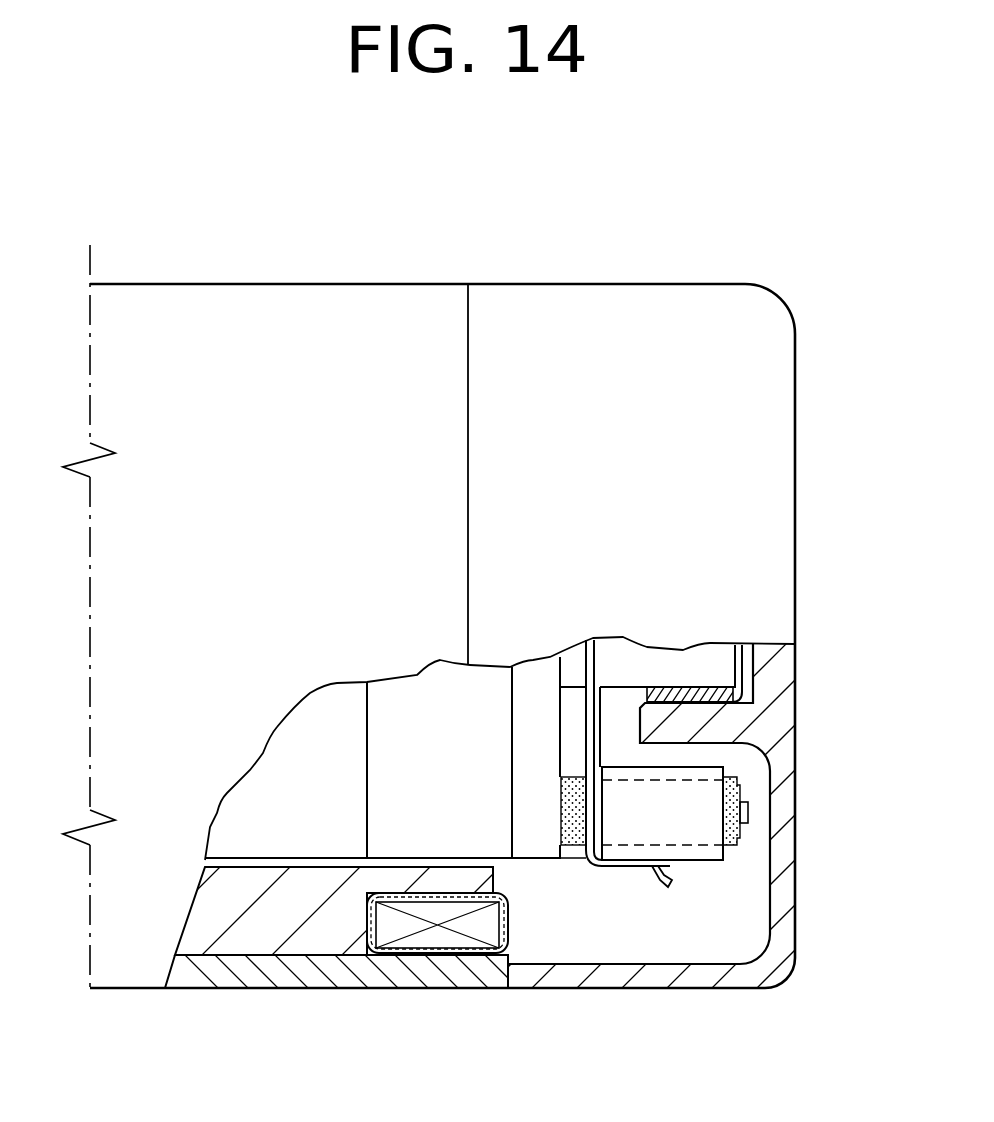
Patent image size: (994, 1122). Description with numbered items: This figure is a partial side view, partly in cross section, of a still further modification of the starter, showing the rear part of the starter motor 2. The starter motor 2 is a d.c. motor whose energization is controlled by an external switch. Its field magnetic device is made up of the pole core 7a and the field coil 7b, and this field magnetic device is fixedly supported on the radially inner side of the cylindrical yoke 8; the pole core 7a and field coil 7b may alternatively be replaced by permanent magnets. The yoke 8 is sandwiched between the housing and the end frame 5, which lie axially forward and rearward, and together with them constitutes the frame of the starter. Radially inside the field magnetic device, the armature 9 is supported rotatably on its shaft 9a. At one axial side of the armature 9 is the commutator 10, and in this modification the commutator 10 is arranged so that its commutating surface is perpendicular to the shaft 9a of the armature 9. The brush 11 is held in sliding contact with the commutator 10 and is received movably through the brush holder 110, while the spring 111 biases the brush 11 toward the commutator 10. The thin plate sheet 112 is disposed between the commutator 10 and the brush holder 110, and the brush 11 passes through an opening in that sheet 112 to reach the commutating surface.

The starter motor 2 is at (352, 283).
The end frame 5 is at (773, 967).
The pole core 7a is at (195, 935).
The field coil 7b is at (427, 933).
The cylindrical yoke 8 is at (242, 977).
The armature 9 is at (297, 830).
The shaft 9a is at (650, 662).
The commutator 10 is at (570, 860).
The brush 11 is at (572, 797).
The brush holder 110 is at (697, 820).
The spring 111 is at (748, 812).
The thin plate sheet 112 is at (632, 867).